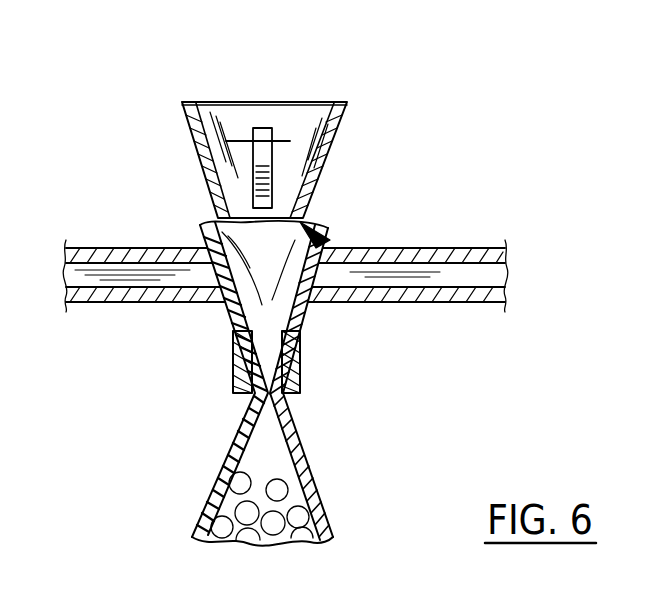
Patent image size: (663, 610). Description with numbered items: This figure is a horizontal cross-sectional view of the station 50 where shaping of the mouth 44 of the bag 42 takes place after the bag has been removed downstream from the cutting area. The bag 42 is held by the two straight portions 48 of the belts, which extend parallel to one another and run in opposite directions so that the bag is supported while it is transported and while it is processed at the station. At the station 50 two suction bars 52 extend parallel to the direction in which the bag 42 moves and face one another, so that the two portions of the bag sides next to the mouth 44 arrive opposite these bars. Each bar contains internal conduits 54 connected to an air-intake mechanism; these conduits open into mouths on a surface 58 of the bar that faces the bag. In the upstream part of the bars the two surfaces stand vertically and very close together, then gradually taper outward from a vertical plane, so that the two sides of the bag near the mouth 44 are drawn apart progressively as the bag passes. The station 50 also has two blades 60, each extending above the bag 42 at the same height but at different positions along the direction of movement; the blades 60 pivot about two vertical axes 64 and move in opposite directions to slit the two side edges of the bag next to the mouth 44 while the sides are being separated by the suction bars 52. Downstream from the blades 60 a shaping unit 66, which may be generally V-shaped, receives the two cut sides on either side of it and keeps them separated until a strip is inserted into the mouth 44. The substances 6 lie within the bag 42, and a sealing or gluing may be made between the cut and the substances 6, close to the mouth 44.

The station 50 is at (370, 84).
The vertical axes 64 is at (300, 108).
The shaping unit 66 is at (230, 110).
The blades 60 is at (253, 197).
The surface 58 is at (290, 224).
The mouth 44 is at (262, 246).
The suction bars 52 is at (412, 250).
The internal conduits 54 is at (432, 278).
The straight portions 48 is at (237, 367).
The bag 42 is at (216, 484).
The substances 6 is at (247, 480).